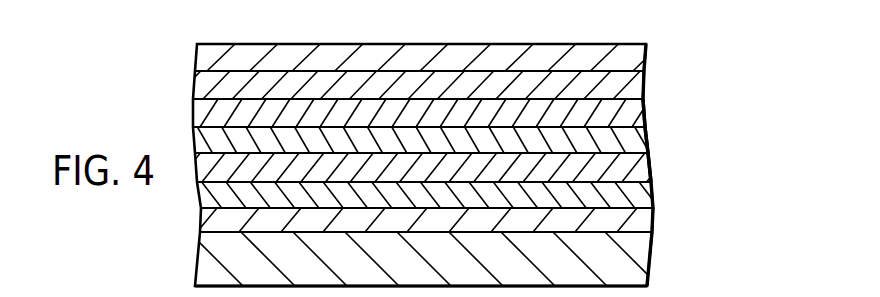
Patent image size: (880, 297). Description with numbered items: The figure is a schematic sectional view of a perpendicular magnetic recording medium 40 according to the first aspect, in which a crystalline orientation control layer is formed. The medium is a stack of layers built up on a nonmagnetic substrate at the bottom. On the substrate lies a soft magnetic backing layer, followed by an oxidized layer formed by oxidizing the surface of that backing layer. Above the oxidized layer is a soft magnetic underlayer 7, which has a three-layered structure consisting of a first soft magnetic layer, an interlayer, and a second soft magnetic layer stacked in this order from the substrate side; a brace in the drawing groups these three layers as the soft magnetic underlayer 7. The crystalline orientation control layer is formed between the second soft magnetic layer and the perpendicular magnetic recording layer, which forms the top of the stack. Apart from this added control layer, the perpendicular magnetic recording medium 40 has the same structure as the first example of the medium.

The perpendicular magnetic recording medium 40 is at (697, 42).
The soft magnetic underlayer 7 is at (688, 98).